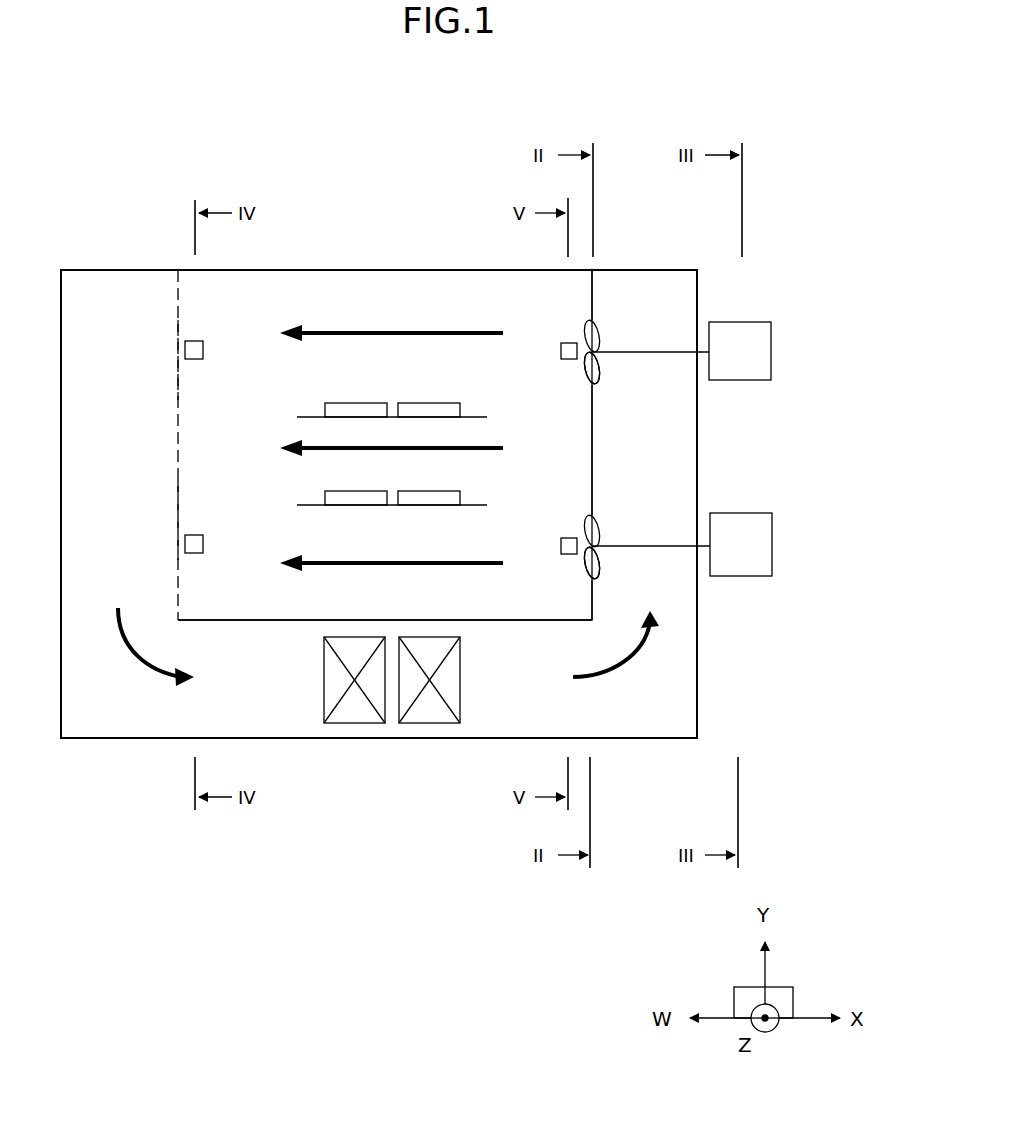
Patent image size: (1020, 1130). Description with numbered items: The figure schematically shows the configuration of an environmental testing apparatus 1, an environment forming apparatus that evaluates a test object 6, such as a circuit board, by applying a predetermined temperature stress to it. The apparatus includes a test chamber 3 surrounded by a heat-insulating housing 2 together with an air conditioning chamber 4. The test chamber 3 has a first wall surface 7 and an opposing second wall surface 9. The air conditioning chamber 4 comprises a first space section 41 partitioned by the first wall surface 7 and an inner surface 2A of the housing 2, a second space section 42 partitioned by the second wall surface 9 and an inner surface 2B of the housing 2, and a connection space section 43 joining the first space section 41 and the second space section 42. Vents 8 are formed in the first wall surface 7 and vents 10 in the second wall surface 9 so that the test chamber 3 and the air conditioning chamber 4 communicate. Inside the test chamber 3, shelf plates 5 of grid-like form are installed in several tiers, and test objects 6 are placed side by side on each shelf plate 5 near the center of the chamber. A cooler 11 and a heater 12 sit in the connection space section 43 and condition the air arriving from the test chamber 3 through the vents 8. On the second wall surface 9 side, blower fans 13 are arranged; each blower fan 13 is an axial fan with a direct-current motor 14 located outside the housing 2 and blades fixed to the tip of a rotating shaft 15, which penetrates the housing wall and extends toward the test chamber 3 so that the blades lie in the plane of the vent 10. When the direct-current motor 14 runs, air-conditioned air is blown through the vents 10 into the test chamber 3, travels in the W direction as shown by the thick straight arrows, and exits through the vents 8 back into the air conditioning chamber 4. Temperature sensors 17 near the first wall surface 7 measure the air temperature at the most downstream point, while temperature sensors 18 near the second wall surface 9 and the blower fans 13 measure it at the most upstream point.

The environmental testing apparatus 1 is at (96, 126).
The heat-insulating housing 2 is at (340, 270).
The inner surface of the housing 2A is at (62, 447).
The inner surface of the housing 2B is at (695, 703).
The test chamber 3 is at (258, 513).
The air conditioning chamber 4 is at (258, 686).
The shelf plate 5 is at (473, 505).
The test object 6 is at (354, 403).
The first wall surface 7 is at (176, 502).
The vents 8 is at (168, 362).
The second wall surface 9 is at (590, 412).
The vents 10 is at (583, 322).
The cooler 11 is at (355, 723).
The heater 12 is at (430, 723).
The blower fan 13 is at (600, 370).
The direct-current motor 14 is at (742, 322).
The rotating shaft 15 is at (680, 352).
The temperature sensor 17 is at (196, 341).
The temperature sensor 18 is at (561, 348).
The first space section 41 is at (114, 310).
The second space section 42 is at (687, 310).
The connection space section 43 is at (537, 726).